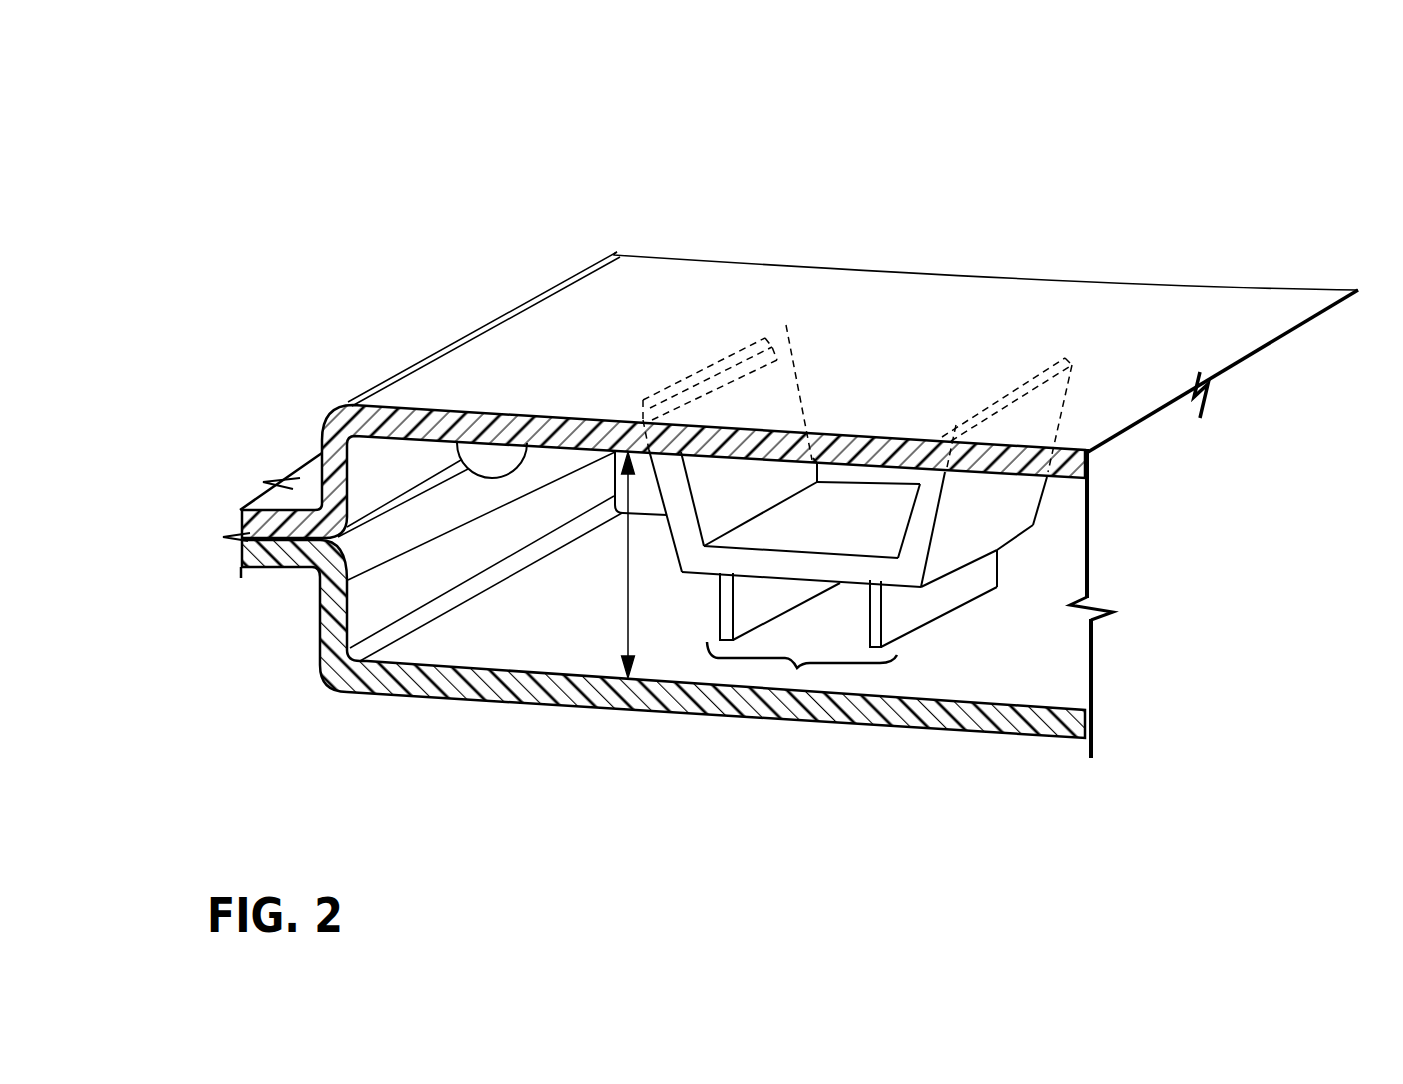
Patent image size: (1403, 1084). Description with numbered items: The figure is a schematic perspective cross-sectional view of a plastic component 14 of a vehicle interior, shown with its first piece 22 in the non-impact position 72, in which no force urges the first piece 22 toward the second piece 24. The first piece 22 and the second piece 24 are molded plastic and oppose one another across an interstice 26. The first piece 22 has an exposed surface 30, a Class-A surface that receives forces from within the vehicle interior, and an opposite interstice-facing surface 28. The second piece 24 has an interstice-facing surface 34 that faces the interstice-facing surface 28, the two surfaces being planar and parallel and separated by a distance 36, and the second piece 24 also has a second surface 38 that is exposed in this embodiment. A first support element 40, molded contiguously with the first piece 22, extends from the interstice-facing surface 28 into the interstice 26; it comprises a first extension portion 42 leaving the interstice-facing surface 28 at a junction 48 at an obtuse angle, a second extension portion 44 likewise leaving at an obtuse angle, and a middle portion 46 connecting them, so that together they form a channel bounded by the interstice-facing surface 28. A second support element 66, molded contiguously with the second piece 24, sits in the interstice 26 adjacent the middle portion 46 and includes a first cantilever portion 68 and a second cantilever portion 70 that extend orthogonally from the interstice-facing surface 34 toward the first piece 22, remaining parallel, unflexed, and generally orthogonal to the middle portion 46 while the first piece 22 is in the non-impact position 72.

The plastic component 14 is at (383, 200).
The first piece 22 is at (733, 303).
The second piece 24 is at (553, 690).
The interstice 26 is at (1018, 640).
The interstice-facing surface 28 is at (454, 474).
The exposed surface 30 is at (624, 336).
The interstice-facing surface 34 is at (510, 636).
The distance 36 is at (629, 607).
The second surface 38 is at (758, 717).
The first support element 40 is at (940, 530).
The first extension portion 42 is at (723, 488).
The second extension portion 44 is at (970, 493).
The middle portion 46 is at (855, 512).
The junction 48 is at (692, 372).
The second support element 66 is at (799, 670).
The first cantilever portion 68 is at (720, 603).
The second cantilever portion 70 is at (877, 610).
The non-impact position 72 is at (1110, 263).